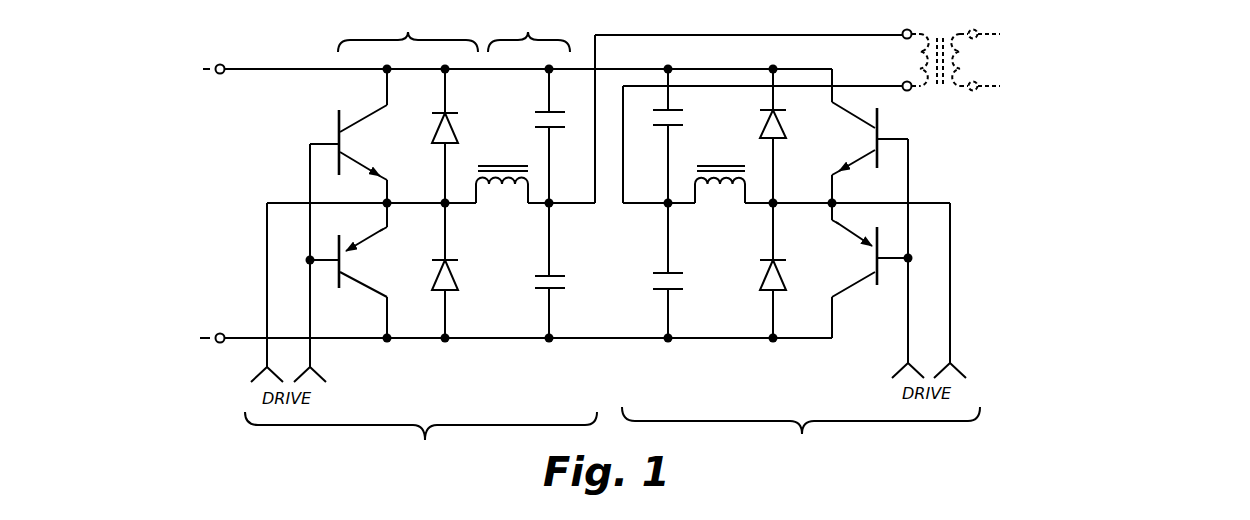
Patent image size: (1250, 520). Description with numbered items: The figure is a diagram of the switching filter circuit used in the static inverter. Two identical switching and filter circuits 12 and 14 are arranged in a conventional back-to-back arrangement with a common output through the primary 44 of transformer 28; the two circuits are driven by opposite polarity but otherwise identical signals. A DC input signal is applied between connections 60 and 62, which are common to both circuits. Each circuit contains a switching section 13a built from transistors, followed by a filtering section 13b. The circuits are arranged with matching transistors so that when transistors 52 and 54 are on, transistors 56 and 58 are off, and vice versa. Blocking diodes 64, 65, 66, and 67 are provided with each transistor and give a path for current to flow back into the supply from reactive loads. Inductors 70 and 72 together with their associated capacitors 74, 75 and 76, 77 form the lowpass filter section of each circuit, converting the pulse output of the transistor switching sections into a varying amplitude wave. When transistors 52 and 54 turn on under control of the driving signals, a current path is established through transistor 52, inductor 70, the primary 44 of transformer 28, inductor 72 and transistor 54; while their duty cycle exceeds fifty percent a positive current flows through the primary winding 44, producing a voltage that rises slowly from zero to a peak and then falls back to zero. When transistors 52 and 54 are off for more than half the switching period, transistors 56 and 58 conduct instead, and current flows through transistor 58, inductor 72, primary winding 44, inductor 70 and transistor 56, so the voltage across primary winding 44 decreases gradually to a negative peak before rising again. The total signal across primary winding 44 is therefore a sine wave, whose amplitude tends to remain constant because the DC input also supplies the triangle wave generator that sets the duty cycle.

The switching and filter circuit 12 is at (421, 438).
The switching section 13a is at (408, 29).
The filtering section 13b is at (529, 29).
The switching and filter circuit 14 is at (801, 434).
The transformer 28 is at (962, 47).
The primary winding 44 is at (918, 60).
The transistor 52 is at (350, 146).
The transistor 54 is at (860, 258).
The transistor 56 is at (352, 266).
The transistor 58 is at (862, 138).
The connection 60 is at (224, 64).
The connection 62 is at (222, 333).
The blocking diode 64 is at (459, 128).
The blocking diode 65 is at (458, 278).
The blocking diode 66 is at (757, 130).
The blocking diode 67 is at (762, 280).
The inductor 70 is at (520, 197).
The inductor 72 is at (736, 197).
The capacitor 74 is at (551, 135).
The capacitor 75 is at (556, 275).
The capacitor 76 is at (678, 118).
The capacitor 77 is at (679, 274).